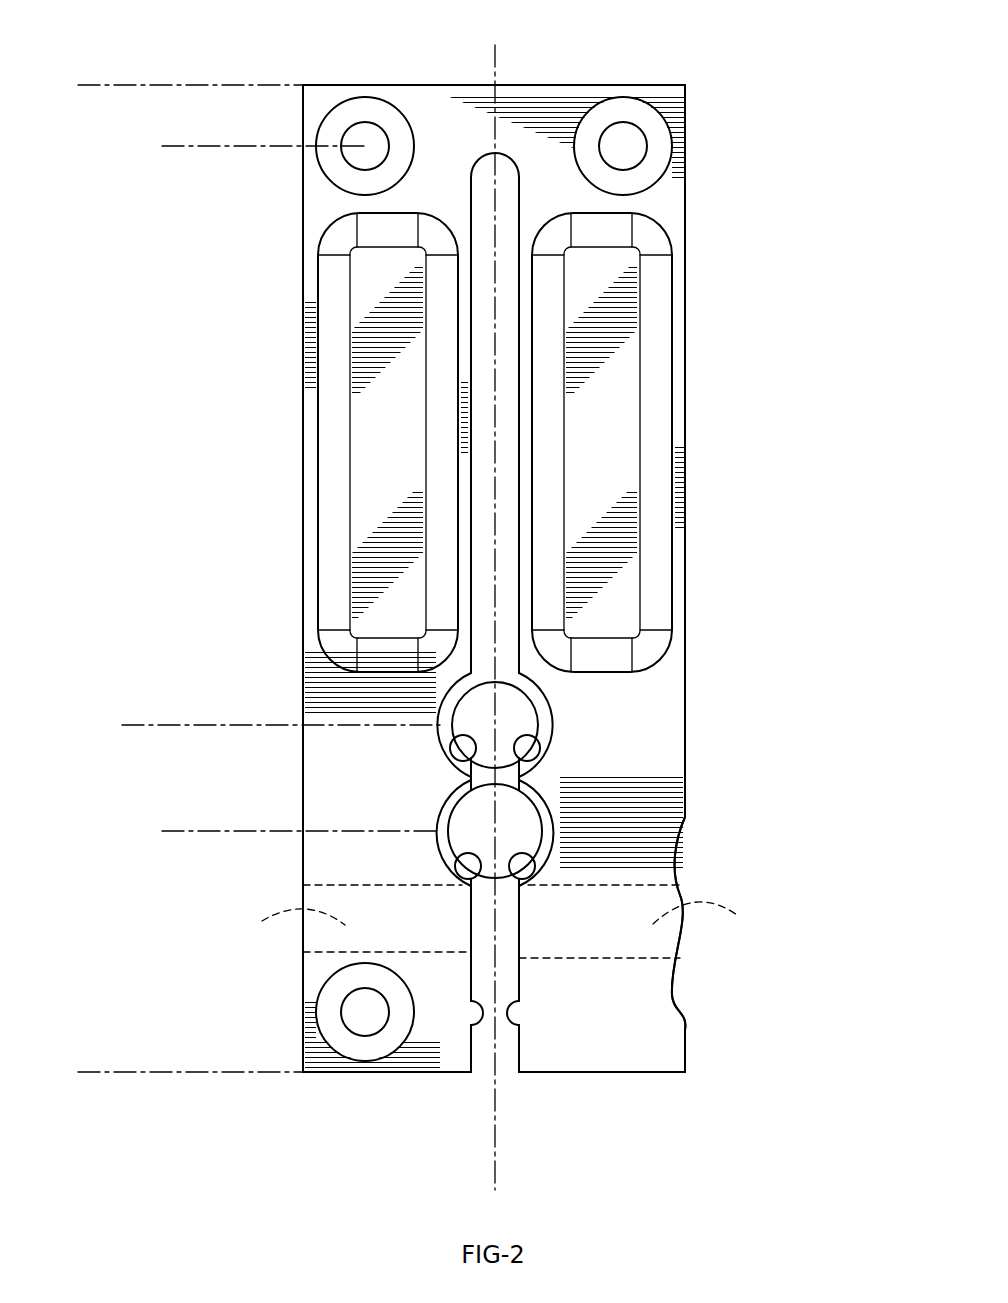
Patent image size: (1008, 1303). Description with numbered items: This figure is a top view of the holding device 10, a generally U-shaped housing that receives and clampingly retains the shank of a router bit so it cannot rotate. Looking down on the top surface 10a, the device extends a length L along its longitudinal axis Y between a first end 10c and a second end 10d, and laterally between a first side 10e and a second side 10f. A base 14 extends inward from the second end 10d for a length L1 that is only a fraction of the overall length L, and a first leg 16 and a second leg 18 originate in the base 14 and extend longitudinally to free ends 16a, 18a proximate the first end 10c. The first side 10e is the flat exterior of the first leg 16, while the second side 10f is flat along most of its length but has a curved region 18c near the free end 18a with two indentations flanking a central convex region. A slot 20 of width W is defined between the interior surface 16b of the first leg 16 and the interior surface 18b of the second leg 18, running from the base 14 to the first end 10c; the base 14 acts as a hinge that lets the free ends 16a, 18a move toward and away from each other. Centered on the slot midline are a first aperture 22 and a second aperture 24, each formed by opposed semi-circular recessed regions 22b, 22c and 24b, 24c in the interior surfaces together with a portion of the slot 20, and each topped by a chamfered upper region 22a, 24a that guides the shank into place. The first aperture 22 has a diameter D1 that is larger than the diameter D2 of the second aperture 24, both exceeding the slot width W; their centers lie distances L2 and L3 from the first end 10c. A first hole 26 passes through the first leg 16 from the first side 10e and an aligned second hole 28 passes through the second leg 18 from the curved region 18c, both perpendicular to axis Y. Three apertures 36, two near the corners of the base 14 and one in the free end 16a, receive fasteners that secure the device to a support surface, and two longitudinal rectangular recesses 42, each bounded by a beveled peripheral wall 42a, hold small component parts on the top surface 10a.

The holding device 10 is at (705, 629).
The top surface 10a is at (345, 870).
The first end 10c is at (336, 1074).
The second end 10d is at (590, 85).
The first side 10e is at (303, 283).
The second side 10f is at (686, 209).
The base 14 is at (475, 125).
The first leg 16 is at (344, 952).
The free end of first leg 16a is at (407, 1075).
The interior surface of first leg 16b is at (467, 1027).
The second leg 18 is at (645, 936).
The free end of second leg 18a is at (582, 1075).
The interior surface of second leg 18b is at (523, 1027).
The curved region 18c is at (696, 946).
The slot 20 is at (493, 400).
The first aperture 22 is at (495, 852).
The chamfered upper region of first aperture 22a is at (548, 850).
The recessed region 22b is at (470, 890).
The recessed region 22c is at (520, 890).
The second aperture 24 is at (494, 731).
The chamfered upper region of second aperture 24a is at (548, 720).
The recessed region 24b is at (452, 760).
The recessed region 24c is at (545, 760).
The first hole 26 is at (286, 922).
The second hole 28 is at (713, 917).
The apertures 36 is at (363, 146).
The recesses 42 is at (497, 442).
The beveled peripheral wall 42a is at (656, 349).
The diameter of first aperture D1 is at (448, 831).
The diameter of second aperture D2 is at (452, 725).
The length L is at (92, 85).
The length of base L1 is at (175, 195).
The distance to first aperture L2 is at (173, 831).
The distance to second aperture L3 is at (133, 725).
The slot width W is at (573, 1180).
The longitudinal axis Y is at (500, 58).